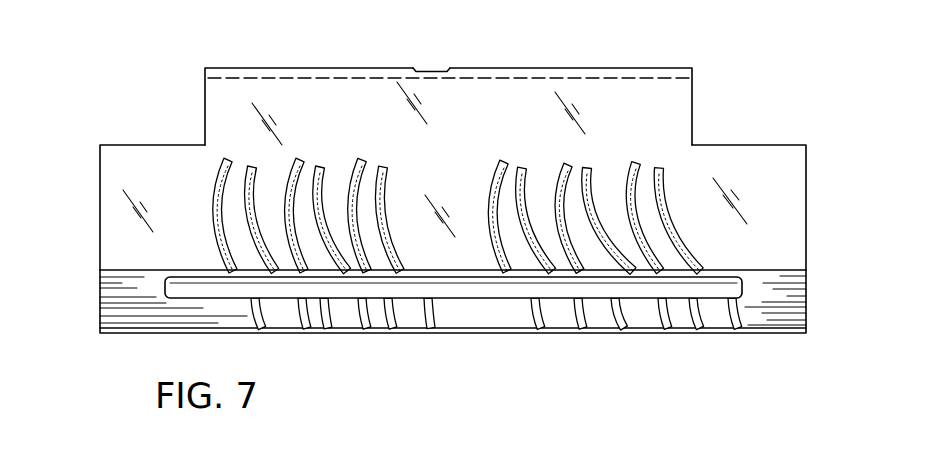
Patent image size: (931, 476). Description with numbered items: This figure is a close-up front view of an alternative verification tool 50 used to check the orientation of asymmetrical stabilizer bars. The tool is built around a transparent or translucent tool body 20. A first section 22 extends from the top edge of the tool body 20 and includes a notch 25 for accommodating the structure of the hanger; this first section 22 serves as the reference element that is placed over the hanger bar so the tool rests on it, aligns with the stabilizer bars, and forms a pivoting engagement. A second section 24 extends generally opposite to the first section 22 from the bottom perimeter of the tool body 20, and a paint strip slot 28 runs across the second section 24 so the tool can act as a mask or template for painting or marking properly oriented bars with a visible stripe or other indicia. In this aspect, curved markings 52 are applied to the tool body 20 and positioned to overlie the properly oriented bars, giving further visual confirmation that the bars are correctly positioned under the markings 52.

The verification tool 50 is at (78, 260).
The tool body 20 is at (806, 175).
The first section 22 is at (588, 68).
The notch 25 is at (431, 68).
The curved markings 52 is at (215, 188).
The paint strip slot 28 is at (484, 297).
The second section 24 is at (745, 332).